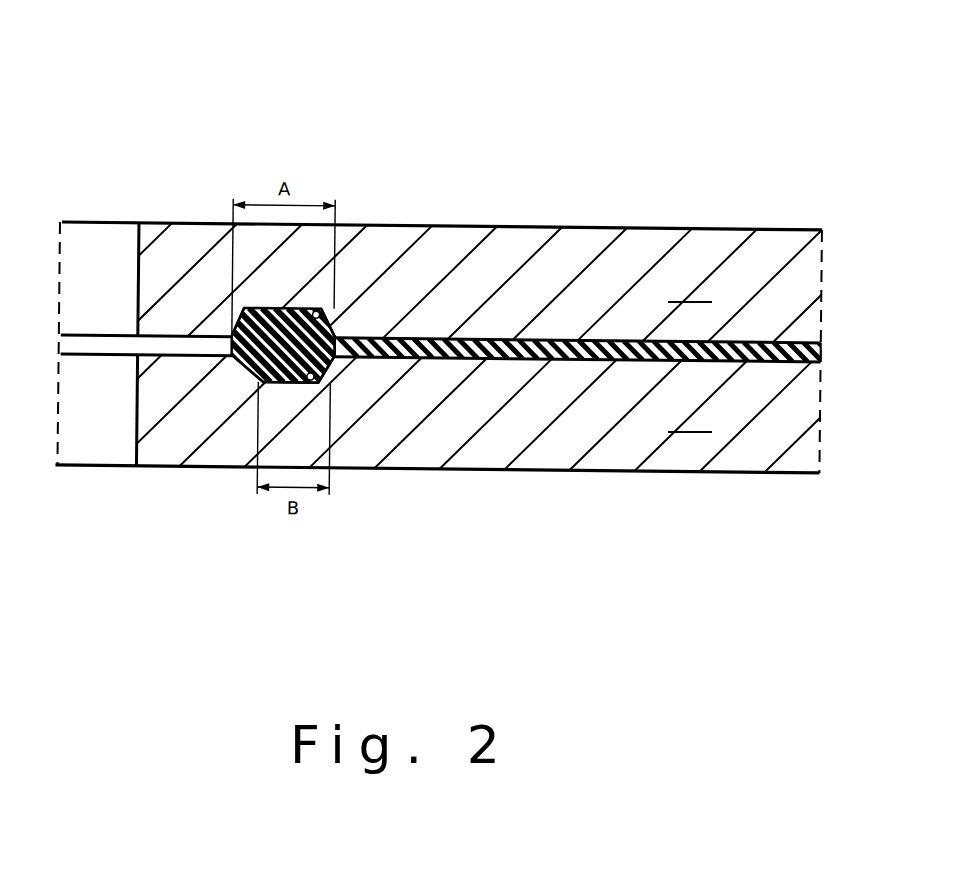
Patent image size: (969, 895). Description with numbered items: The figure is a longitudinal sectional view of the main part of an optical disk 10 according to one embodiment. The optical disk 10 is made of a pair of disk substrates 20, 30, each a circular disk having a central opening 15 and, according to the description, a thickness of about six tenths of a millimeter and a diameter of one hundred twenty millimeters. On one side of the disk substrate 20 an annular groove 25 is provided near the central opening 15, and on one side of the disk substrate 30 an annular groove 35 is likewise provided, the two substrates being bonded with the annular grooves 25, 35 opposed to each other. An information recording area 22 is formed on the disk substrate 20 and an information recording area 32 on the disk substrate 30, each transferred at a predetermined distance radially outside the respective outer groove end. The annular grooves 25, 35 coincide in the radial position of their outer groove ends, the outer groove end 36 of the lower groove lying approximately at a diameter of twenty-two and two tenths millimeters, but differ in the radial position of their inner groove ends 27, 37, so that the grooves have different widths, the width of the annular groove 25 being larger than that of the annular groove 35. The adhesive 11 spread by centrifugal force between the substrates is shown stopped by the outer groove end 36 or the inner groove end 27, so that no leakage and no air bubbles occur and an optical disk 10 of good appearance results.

The optical disk 10 is at (439, 347).
The adhesive 11 is at (594, 350).
The central opening 15 is at (137, 344).
The disk substrate 20 is at (472, 283).
The information recording area 22 is at (578, 340).
The annular groove 25 is at (328, 323).
The inner groove end 27 is at (238, 322).
The disk substrate 30 is at (462, 414).
The information recording area 32 is at (578, 359).
The annular groove 35 is at (326, 369).
The outer groove end 36 is at (290, 382).
The inner groove end 37 is at (247, 368).